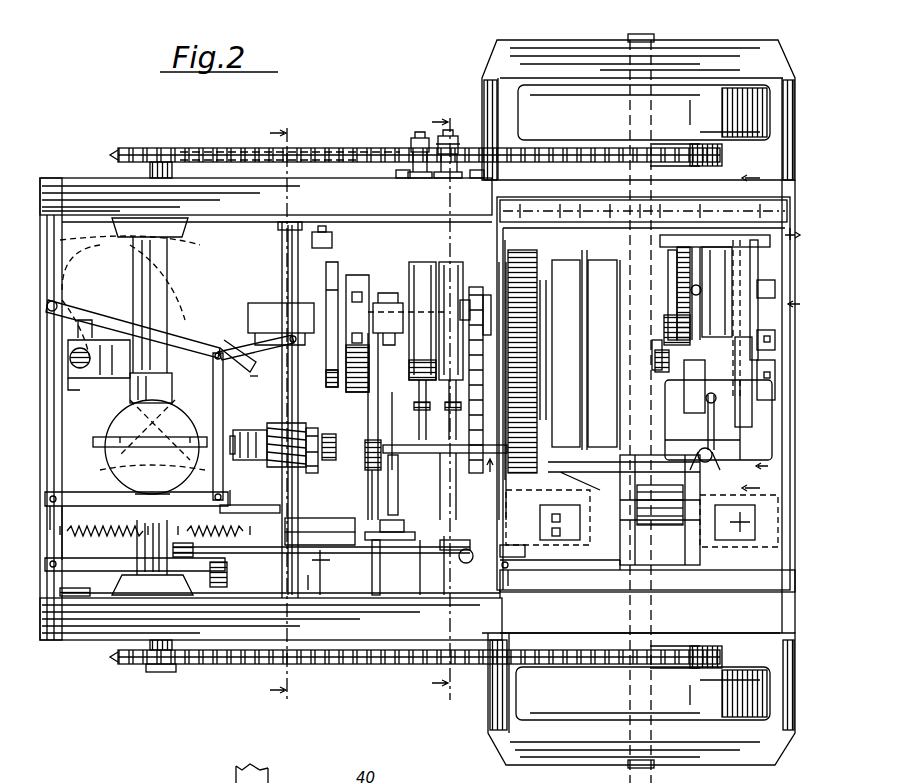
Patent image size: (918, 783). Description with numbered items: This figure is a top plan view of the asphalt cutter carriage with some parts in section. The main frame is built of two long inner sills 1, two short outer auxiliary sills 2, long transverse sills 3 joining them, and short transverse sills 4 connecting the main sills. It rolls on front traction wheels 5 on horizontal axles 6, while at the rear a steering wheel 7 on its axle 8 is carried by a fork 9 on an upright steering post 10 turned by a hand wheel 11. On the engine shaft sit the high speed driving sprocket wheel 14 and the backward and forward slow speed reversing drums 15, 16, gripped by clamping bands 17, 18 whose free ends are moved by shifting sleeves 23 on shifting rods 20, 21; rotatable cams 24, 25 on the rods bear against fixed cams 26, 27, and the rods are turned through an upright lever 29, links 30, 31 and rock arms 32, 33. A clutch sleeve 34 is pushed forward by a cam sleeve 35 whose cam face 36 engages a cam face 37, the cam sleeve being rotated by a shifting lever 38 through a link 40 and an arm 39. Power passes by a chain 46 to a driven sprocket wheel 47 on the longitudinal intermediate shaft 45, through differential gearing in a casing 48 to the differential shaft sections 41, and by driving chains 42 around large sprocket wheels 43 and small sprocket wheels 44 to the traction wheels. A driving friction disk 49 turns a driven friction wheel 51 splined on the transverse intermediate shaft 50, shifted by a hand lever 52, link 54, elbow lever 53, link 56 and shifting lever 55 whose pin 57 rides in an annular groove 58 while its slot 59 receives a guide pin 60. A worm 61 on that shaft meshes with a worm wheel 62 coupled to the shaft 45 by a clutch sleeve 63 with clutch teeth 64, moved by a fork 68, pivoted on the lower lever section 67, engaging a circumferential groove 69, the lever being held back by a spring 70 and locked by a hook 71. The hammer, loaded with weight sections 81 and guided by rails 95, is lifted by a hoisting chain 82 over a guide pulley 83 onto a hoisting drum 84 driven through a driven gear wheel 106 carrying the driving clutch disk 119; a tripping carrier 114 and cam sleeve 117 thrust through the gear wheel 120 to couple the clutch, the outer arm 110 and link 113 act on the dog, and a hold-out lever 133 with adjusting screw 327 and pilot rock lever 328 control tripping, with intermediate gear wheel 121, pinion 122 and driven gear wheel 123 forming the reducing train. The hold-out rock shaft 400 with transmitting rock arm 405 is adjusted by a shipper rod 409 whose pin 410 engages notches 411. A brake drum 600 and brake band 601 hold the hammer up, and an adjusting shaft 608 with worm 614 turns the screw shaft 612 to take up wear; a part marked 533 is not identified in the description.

The inner long sill 1 is at (228, 206).
The outer short auxiliary sill 2 is at (638, 402).
The long transverse sill 3 is at (532, 414).
The short transverse sill 4 is at (344, 378).
The front traction wheel 5 is at (803, 528).
The horizontal axle 6 is at (640, 40).
The steering wheel 7 is at (130, 380).
The horizontal axle 8 is at (486, 468).
The fork 9 is at (98, 326).
The upright steering post 10 is at (76, 382).
The hand wheel 11 is at (172, 258).
The high speed driving sprocket wheel 14 is at (472, 298).
The backward slow speed motion reversing drum 15 is at (416, 372).
The forward slow speed motion reversing drum 16 is at (440, 262).
The clamping band 17 is at (415, 262).
The clamping band 18 is at (448, 392).
The horizontal shifting rod 20 is at (420, 568).
The horizontal shifting rod 21 is at (444, 570).
The shifting sleeve 23 is at (446, 408).
The rotatable cam 24 is at (410, 142).
The rotatable cam 25 is at (457, 140).
The fixed cam 26 is at (420, 160).
The fixed cam 27 is at (452, 162).
The upright lever 29 is at (165, 548).
The link 30 is at (260, 552).
The link 31 is at (324, 572).
The upright rock arm 32 is at (404, 524).
The upright rock arm 33 is at (468, 564).
The clutch sleeve 34 is at (388, 300).
The rotatable cam sleeve 35 is at (408, 336).
The cam face 36 is at (384, 316).
The cam face 37 is at (470, 288).
The transversely-swinging shifting lever 38 is at (380, 476).
The arm 39 is at (328, 300).
The link 40 is at (380, 396).
The differential shaft section 41 is at (155, 160).
The driving chain 42 is at (230, 678).
The large sprocket wheel 43 is at (720, 156).
The small sprocket wheel 44 is at (116, 156).
The longitudinal intermediate shaft 45 is at (445, 445).
The driving chain 46 is at (450, 460).
The driven sprocket wheel 47 is at (466, 476).
The casing 48 is at (150, 447).
The driving friction disk 49 is at (328, 246).
The transverse intermediate shaft 50 is at (280, 244).
The driven friction wheel 51 is at (266, 303).
The upright hand lever 52 is at (246, 604).
The elbow lever 53 is at (64, 505).
The link 54 is at (100, 568).
The shifting lever 55 is at (190, 335).
The link 56 is at (224, 400).
The pin 57 is at (270, 340).
The annular groove 58 is at (282, 348).
The longitudinal slot 59 is at (86, 320).
The guide pin 60 is at (72, 290).
The worm 61 is at (278, 430).
The worm wheel 62 is at (232, 445).
The clutch sleeve 63 is at (320, 432).
The clutch teeth 64 is at (340, 470).
The lower lever section 67 is at (246, 510).
The fork 68 is at (414, 530).
The circumferential groove 69 is at (338, 443).
The spring 70 is at (212, 498).
The hook 71 is at (320, 531).
The supplemental weight sections 81 is at (647, 576).
The hoisting chain 82 is at (718, 420).
The guide pulley 83 is at (730, 582).
The hoisting drum 84 is at (644, 354).
The upright guide rail 95 is at (520, 572).
The driven gear wheel 106 is at (532, 262).
The outer arm 110 is at (790, 234).
The link 113 is at (758, 270).
The tripping carrier 114 is at (762, 400).
The cam sleeve 117 is at (760, 352).
The driving clutch disk 119 is at (561, 353).
The gear wheel 120 is at (660, 366).
The intermediate gear wheel 121 is at (676, 304).
The intermediate gear pinion 122 is at (670, 342).
The driven gear wheel 123 is at (676, 284).
The hold-out lever 133 is at (748, 430).
The adjusting screw 327 is at (710, 293).
The pilot rock lever 328 is at (716, 292).
The upper hold-out rock shaft 400 is at (598, 256).
The upper transmitting rock arm 405 is at (664, 264).
The shipper rod 409 is at (504, 504).
The pin 410 is at (500, 566).
The notches 411 is at (502, 598).
The block 533 is at (698, 386).
The brake drum 600 is at (584, 320).
The brake band 601 is at (606, 355).
The adjusting shaft 608 is at (596, 458).
The screw shaft 612 is at (712, 434).
The worm 614 is at (708, 462).